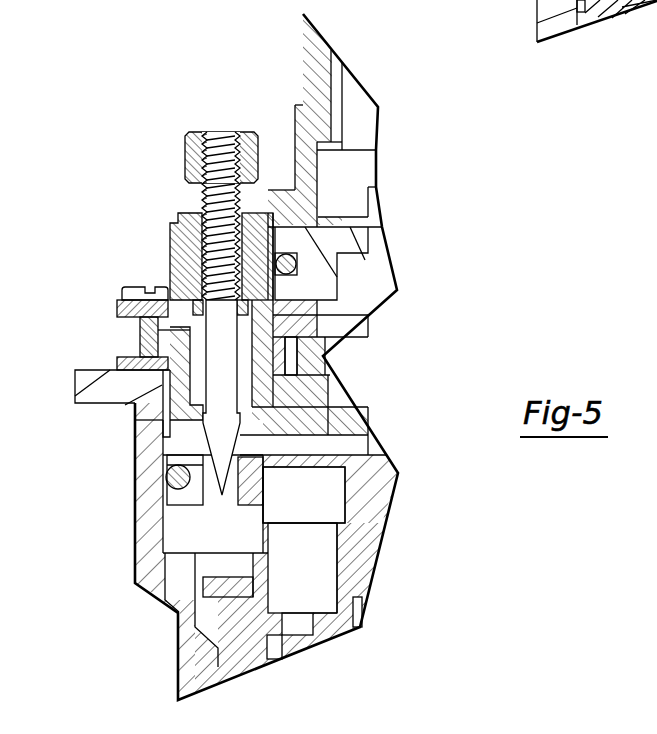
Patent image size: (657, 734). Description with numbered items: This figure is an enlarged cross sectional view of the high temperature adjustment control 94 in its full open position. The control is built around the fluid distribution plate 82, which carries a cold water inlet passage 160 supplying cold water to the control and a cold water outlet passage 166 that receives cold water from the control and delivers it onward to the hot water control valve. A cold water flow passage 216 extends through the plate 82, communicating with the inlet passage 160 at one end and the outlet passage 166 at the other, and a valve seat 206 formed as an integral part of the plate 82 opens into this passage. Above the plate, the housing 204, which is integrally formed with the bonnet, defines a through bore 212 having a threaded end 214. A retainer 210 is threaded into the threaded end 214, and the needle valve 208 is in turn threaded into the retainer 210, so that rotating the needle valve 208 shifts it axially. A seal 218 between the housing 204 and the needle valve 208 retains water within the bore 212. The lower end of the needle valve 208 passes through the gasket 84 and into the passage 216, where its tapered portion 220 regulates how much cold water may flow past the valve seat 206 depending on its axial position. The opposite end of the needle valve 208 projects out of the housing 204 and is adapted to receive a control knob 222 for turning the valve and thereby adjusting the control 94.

The high temperature adjustment control 94 is at (120, 78).
The control knob 222 is at (190, 137).
The retainer 210 is at (185, 205).
The housing 204 is at (172, 248).
The threaded end 214 is at (200, 290).
The seal 218 is at (193, 310).
The needle valve 208 is at (220, 326).
The through bore 212 is at (206, 368).
The gasket 84 is at (200, 420).
The valve seat 206 is at (167, 463).
The cold water flow passage 216 is at (166, 498).
The tapered portion 220 is at (238, 427).
The cold water outlet passage 166 is at (322, 445).
The cold water inlet passage 160 is at (318, 511).
The fluid distribution plate 82 is at (368, 488).